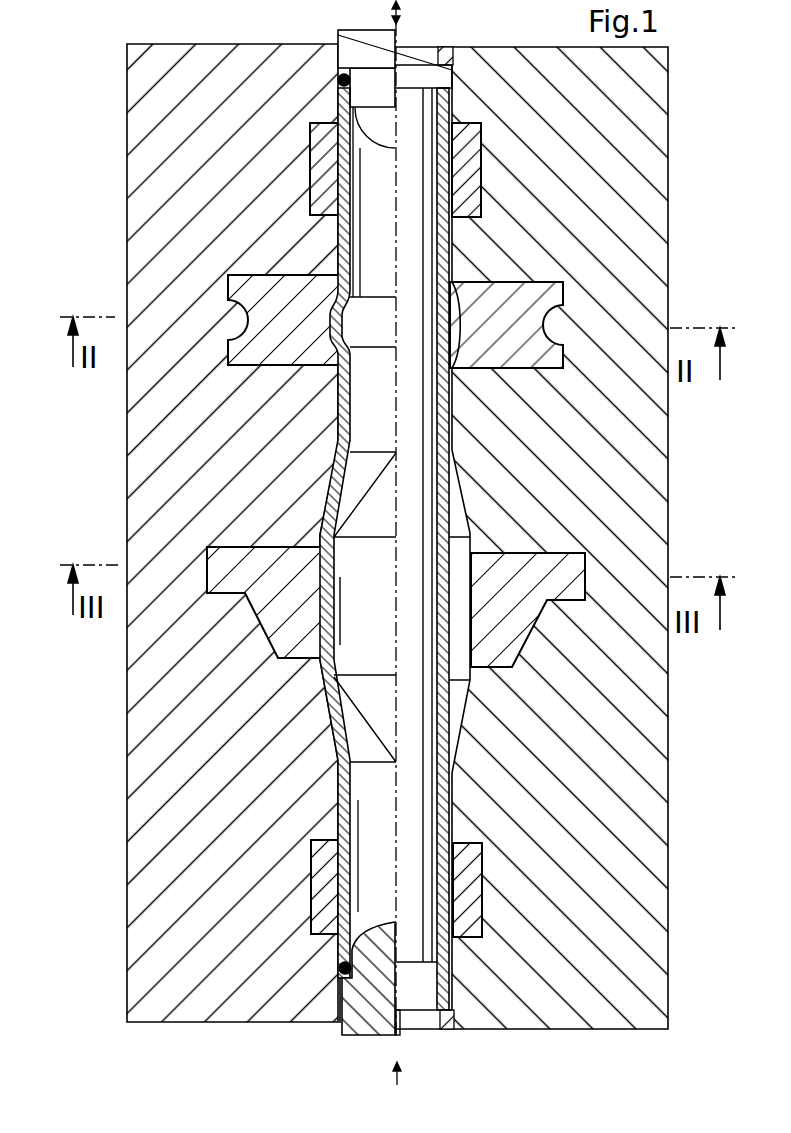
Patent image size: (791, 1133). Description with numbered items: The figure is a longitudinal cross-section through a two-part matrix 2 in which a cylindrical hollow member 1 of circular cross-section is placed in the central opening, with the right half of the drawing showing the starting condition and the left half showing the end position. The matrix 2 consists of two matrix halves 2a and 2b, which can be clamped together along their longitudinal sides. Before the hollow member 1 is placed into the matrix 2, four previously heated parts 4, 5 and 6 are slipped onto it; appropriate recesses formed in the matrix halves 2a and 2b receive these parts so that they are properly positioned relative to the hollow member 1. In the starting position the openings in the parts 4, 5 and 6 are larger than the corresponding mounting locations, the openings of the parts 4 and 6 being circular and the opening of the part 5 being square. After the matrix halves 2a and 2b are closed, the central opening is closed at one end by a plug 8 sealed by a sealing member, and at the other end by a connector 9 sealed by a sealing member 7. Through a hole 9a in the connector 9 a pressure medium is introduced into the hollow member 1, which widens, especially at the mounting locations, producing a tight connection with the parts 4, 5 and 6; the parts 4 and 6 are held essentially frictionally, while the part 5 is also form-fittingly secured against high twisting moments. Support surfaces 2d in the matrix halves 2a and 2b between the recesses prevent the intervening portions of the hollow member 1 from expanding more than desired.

The hollow member 1 is at (440, 243).
The matrix 2 is at (333, 72).
The matrix half 2a is at (143, 128).
The matrix half 2b is at (653, 175).
The support surfaces 2d is at (439, 365).
The part 4 is at (257, 293).
The part 5 is at (268, 605).
The part 6 is at (320, 157).
The sealing member 7 is at (340, 76).
The plug 8 is at (382, 44).
The connector 9 is at (365, 1025).
The hole 9a is at (397, 1038).